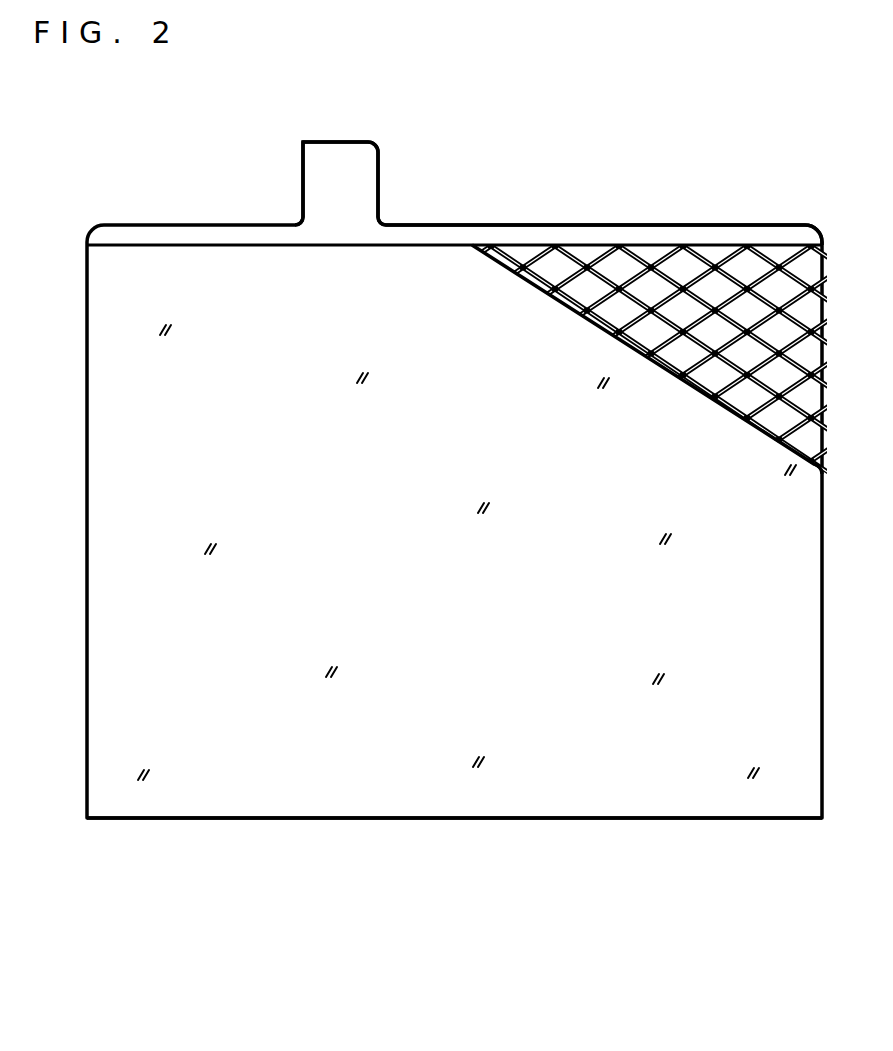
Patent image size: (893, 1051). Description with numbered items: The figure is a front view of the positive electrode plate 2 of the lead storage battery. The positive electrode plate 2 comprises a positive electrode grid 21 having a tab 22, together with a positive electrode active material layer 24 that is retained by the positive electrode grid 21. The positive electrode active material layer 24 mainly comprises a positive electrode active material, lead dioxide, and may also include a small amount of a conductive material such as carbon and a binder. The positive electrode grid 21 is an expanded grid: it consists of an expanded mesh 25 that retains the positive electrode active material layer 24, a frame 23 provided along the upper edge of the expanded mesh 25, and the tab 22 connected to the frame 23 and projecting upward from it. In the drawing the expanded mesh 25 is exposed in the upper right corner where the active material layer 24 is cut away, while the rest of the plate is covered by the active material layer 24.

The positive electrode plate 2 is at (593, 210).
The positive electrode grid 21 is at (725, 240).
The tab 22 is at (340, 165).
The frame 23 is at (471, 232).
The positive electrode active material layer 24 is at (582, 788).
The expanded mesh 25 is at (527, 246).